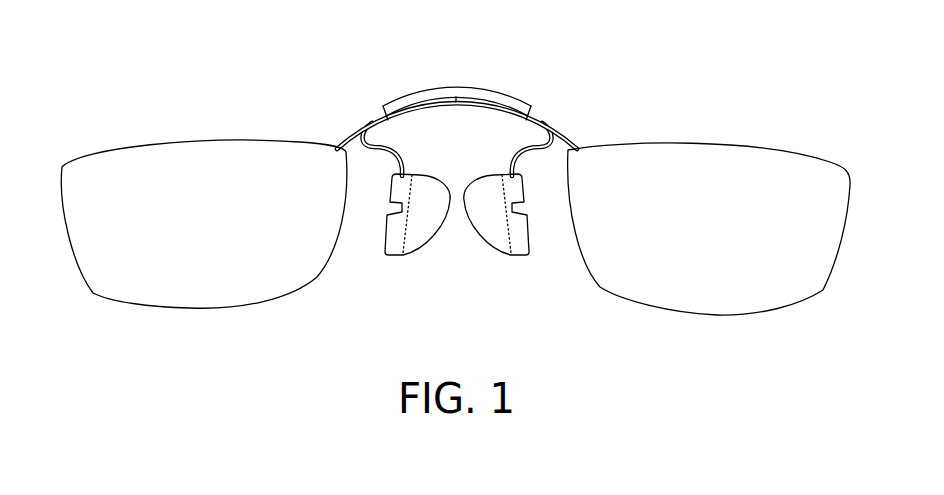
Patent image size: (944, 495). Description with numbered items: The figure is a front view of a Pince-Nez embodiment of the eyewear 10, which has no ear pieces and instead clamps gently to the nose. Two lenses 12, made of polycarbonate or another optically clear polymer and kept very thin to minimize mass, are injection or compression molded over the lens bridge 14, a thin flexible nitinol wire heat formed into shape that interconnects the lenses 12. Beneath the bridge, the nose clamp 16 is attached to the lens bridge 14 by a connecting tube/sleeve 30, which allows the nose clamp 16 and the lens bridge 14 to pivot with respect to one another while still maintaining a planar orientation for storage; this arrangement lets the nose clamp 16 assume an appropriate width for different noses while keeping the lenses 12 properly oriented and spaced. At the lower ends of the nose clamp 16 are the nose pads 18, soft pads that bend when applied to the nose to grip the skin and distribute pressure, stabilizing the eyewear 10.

The eyewear 10 is at (376, 32).
The lenses 12 is at (203, 152).
The lens bridge 14 is at (535, 112).
The nose clamp 16 is at (513, 155).
The nose pads 18 is at (397, 257).
The connecting tube/sleeve 30 is at (501, 92).